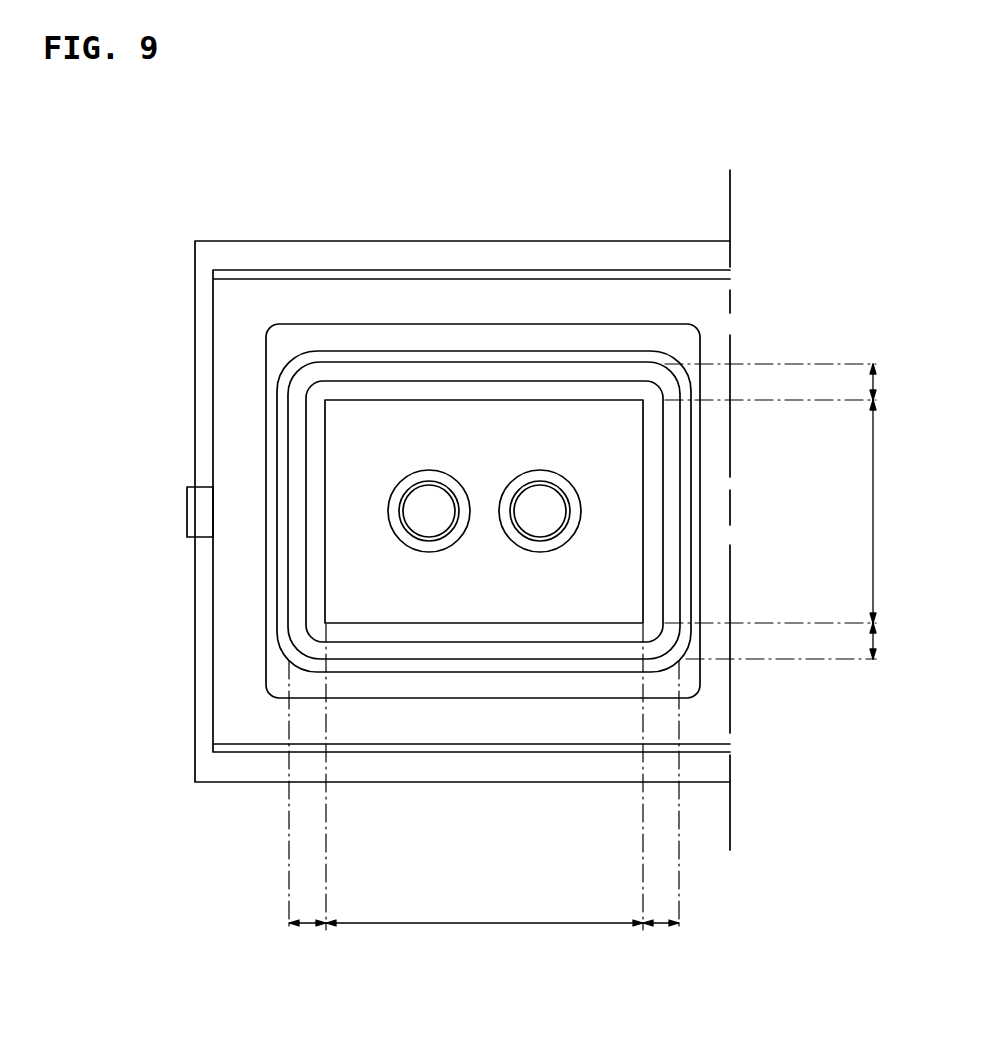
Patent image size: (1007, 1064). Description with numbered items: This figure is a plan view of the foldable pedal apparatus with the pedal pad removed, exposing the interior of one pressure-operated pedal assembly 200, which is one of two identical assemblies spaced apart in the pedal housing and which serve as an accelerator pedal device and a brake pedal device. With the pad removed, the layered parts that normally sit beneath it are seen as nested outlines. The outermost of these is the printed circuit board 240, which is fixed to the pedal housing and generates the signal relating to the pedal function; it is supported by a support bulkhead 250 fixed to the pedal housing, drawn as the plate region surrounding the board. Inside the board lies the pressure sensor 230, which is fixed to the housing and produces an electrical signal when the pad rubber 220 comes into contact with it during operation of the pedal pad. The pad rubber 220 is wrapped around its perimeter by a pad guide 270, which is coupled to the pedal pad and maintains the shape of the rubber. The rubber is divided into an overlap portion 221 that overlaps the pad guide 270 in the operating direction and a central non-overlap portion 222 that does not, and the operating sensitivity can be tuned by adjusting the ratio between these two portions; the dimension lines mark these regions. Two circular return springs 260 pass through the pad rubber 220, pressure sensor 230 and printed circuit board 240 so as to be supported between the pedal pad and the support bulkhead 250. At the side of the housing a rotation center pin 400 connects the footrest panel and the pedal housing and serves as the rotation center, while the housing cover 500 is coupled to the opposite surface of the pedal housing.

The pressure-operated pedal assembly 200 is at (195, 232).
The pad rubber 220 is at (531, 420).
The overlap portion 221 is at (605, 662).
The non-overlap portion 222 is at (625, 680).
The pressure sensor 230 is at (567, 357).
The printed circuit board 240 is at (623, 338).
The support bulkhead 250 is at (245, 648).
The return spring 260 is at (530, 473).
The pad guide 270 is at (312, 482).
The rotation center pin 400 is at (197, 513).
The housing cover 500 is at (693, 254).